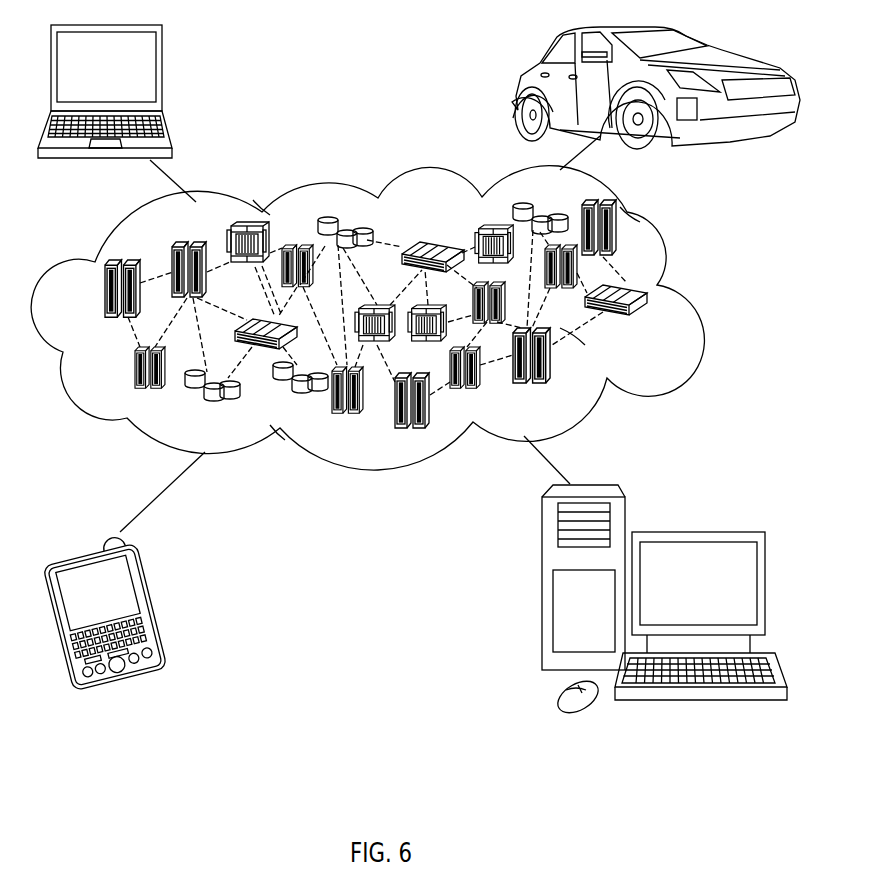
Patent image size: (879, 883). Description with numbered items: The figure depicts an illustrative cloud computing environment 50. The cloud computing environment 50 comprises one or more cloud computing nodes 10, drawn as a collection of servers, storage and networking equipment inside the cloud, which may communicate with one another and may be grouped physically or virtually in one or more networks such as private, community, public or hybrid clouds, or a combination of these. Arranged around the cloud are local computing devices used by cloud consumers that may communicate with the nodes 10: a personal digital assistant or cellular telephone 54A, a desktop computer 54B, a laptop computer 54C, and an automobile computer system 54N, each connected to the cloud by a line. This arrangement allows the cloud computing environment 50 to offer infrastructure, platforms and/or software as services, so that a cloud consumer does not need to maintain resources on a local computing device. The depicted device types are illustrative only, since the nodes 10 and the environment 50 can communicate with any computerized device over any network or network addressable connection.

The cloud computing nodes 10 is at (648, 322).
The cloud computing environment 50 is at (698, 296).
The personal digital assistant or cellular telephone 54A is at (153, 607).
The desktop computer 54B is at (695, 532).
The laptop computer 54C is at (163, 79).
The automobile computer system 54N is at (520, 90).